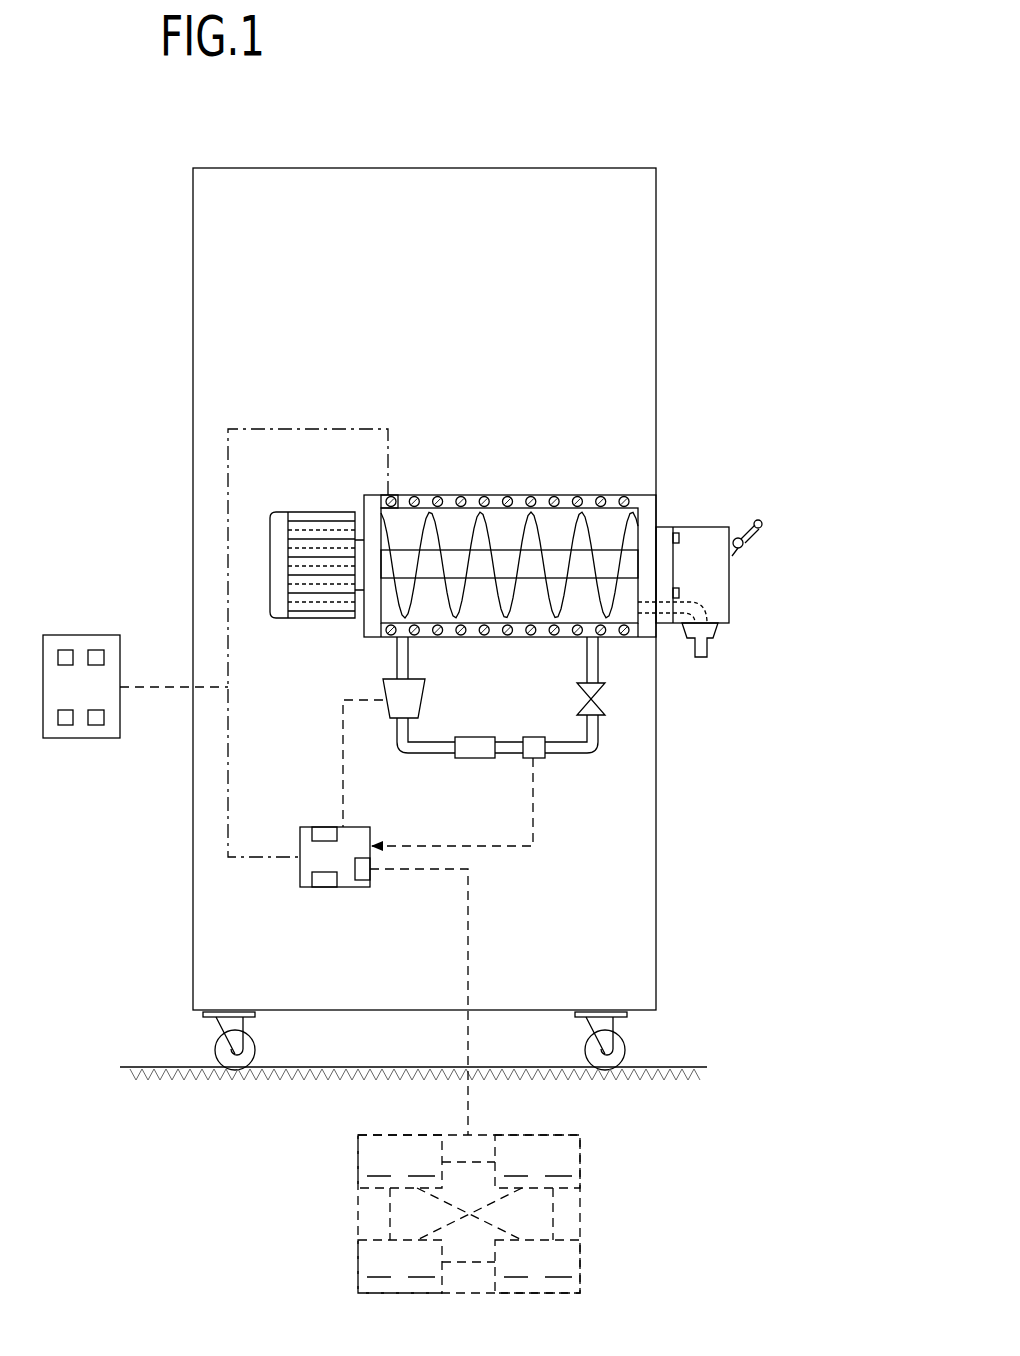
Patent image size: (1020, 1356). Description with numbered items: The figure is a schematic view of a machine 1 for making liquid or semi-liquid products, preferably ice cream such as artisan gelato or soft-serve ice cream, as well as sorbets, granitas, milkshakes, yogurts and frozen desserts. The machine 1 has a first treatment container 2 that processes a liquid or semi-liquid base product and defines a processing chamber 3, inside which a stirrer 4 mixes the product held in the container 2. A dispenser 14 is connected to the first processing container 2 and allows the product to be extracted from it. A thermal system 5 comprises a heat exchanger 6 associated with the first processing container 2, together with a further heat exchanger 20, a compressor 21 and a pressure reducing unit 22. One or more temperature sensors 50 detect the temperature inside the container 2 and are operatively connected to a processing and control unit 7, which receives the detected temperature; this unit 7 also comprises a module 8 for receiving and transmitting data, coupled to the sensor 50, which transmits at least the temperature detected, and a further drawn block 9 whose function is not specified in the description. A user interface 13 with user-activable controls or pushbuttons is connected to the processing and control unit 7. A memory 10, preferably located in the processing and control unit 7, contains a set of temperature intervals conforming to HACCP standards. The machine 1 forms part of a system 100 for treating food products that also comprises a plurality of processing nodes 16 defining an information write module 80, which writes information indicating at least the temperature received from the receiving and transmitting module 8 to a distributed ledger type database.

The machine 1 is at (705, 193).
The first treatment container 2 is at (463, 477).
The processing chamber 3 is at (505, 532).
The stirrer 4 is at (610, 562).
The thermal system 5 is at (558, 760).
The heat exchanger 6 is at (555, 492).
The processing and control unit 7 is at (328, 858).
The module for receiving and transmitting data 8 is at (370, 875).
The processor 9 is at (323, 827).
The memory 10 is at (320, 887).
The user interface 13 is at (85, 632).
The dispenser 14 is at (743, 562).
The processing nodes 16 is at (585, 1215).
The further heat exchanger 20 is at (477, 762).
The compressor 21 is at (377, 683).
The pressure reducing unit 22 is at (600, 735).
The temperature sensor 50 is at (403, 492).
The information write module 80 is at (469, 1214).
The system for treating food products 100 is at (552, 1214).